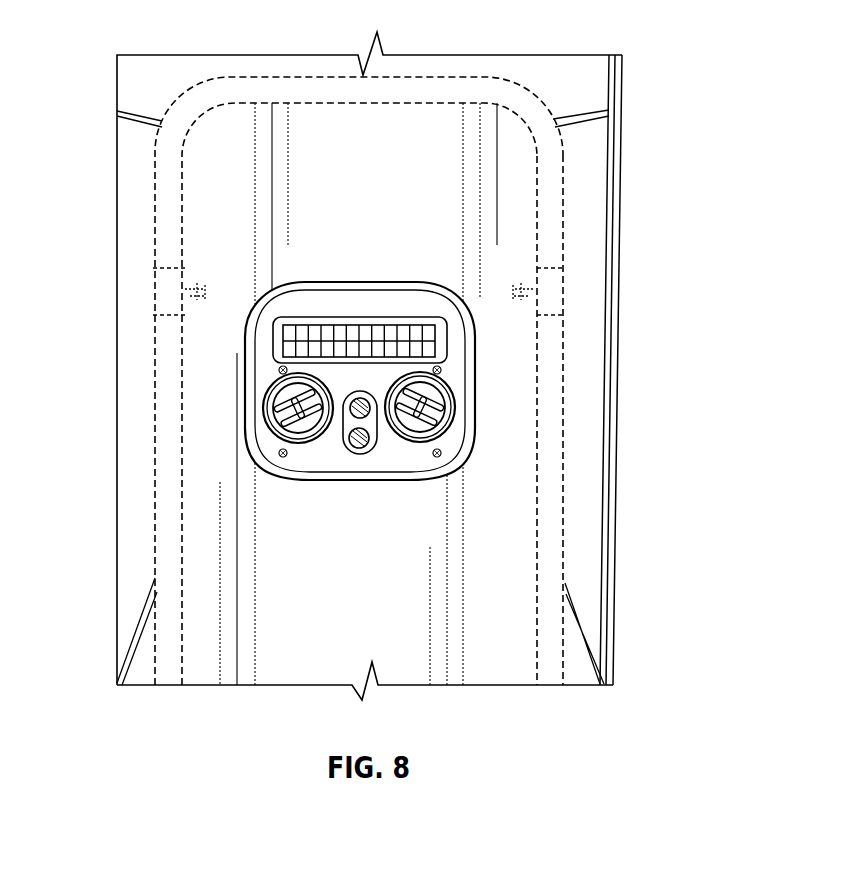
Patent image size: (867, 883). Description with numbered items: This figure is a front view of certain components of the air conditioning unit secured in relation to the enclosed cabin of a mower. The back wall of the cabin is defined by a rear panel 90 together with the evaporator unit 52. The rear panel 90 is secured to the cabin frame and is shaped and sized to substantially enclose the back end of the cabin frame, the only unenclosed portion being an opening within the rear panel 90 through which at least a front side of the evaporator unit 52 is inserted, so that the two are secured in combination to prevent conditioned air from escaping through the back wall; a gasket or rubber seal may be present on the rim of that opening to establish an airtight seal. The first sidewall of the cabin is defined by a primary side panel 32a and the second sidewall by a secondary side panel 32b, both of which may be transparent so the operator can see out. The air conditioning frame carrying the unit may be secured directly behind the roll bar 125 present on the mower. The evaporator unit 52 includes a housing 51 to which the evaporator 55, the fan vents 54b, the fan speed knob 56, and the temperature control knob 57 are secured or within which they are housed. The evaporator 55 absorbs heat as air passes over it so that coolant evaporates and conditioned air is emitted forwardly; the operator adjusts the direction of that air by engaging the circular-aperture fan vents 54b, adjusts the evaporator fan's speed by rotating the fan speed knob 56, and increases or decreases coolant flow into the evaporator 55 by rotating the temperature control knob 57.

The primary side panel 32a is at (131, 222).
The secondary side panel 32b is at (585, 328).
The rear panel 90 is at (438, 136).
The roll bar 125 is at (552, 193).
The evaporator unit 52 is at (329, 268).
The housing 51 is at (282, 302).
The evaporator 55 is at (427, 332).
The fan vents 54b is at (263, 405).
The fan speed knob 56 is at (333, 418).
The temperature control knob 57 is at (371, 435).